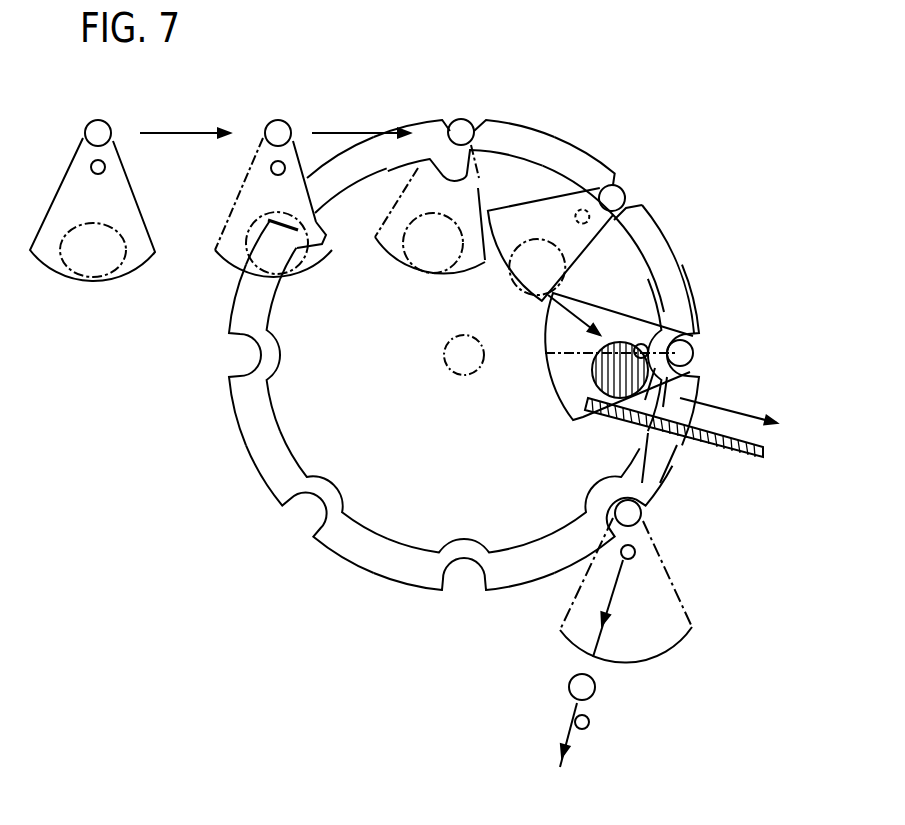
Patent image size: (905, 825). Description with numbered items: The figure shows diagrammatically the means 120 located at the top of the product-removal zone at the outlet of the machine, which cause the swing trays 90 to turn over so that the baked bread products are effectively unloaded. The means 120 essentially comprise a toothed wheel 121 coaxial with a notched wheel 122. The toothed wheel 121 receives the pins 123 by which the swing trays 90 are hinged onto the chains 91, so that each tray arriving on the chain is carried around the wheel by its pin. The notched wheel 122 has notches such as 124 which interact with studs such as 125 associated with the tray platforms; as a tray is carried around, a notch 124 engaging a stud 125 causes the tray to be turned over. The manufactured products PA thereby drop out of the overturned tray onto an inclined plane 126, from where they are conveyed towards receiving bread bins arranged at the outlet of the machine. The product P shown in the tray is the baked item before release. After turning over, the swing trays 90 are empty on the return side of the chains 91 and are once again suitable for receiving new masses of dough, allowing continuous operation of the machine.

The swing tray 90 is at (101, 227).
The chain 91 is at (190, 133).
The product P is at (116, 223).
The manufactured product PA is at (673, 388).
The turning-over means 120 is at (407, 363).
The toothed wheel 121 is at (387, 565).
The notched wheel 122 is at (633, 277).
The pin 123 is at (283, 128).
The notch 124 is at (498, 160).
The stud 125 is at (600, 184).
The inclined plane 126 is at (709, 445).